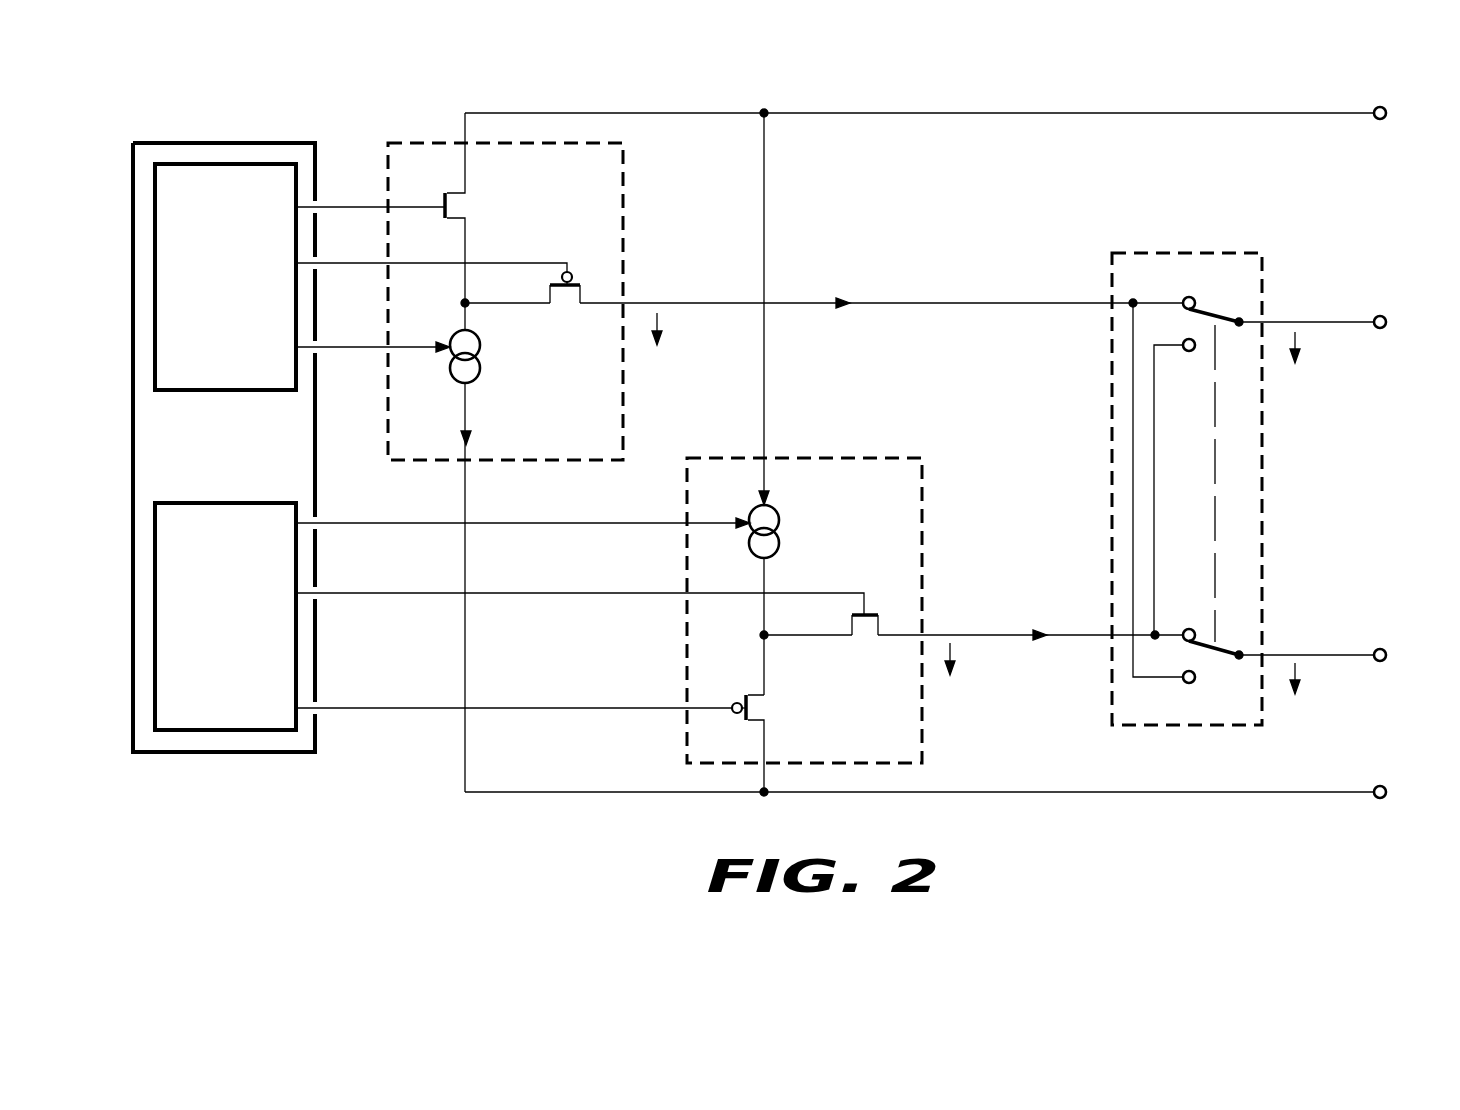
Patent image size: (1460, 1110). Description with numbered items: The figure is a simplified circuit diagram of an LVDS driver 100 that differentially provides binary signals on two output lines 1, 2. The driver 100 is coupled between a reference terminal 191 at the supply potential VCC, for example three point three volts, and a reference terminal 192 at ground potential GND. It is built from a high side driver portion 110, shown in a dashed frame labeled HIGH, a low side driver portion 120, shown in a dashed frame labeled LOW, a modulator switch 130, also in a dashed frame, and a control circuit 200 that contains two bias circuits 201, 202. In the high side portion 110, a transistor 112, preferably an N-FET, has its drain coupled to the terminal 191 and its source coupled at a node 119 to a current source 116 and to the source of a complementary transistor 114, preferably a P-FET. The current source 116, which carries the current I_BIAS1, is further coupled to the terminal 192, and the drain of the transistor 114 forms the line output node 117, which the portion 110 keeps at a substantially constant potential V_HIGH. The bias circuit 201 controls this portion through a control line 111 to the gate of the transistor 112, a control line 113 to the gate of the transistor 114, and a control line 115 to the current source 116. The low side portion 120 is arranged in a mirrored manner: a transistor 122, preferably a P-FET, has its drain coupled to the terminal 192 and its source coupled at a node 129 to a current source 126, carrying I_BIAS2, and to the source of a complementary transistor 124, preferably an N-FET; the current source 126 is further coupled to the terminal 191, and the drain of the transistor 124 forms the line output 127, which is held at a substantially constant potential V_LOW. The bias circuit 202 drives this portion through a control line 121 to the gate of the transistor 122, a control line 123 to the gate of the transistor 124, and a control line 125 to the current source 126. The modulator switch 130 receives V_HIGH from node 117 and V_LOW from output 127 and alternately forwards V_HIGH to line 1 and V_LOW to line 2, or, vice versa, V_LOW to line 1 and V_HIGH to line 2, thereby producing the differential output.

The LVDS driver 100 is at (796, 491).
The control circuit 200 is at (178, 143).
The bias circuit 201 is at (197, 390).
The bias circuit 202 is at (255, 503).
The high side driver portion 110 is at (623, 220).
The control line 111 is at (355, 207).
The transistor 112 is at (467, 207).
The control line 113 is at (355, 263).
The transistor 114 is at (562, 310).
The control line 115 is at (355, 347).
The current source 116 is at (481, 374).
The line output node 117 is at (708, 303).
The node 119 is at (462, 303).
The low side driver portion 120 is at (922, 533).
The control line 121 is at (358, 708).
The transistor 122 is at (770, 708).
The control line 123 is at (355, 593).
The transistor 124 is at (865, 642).
The control line 125 is at (355, 523).
The current source 126 is at (781, 548).
The line output 127 is at (1003, 635).
The node 129 is at (762, 635).
The modulator switch 130 is at (1262, 475).
The reference terminal 191 is at (1345, 114).
The reference terminal 192 is at (1345, 793).
The line 1 is at (1353, 322).
The line 2 is at (1353, 655).